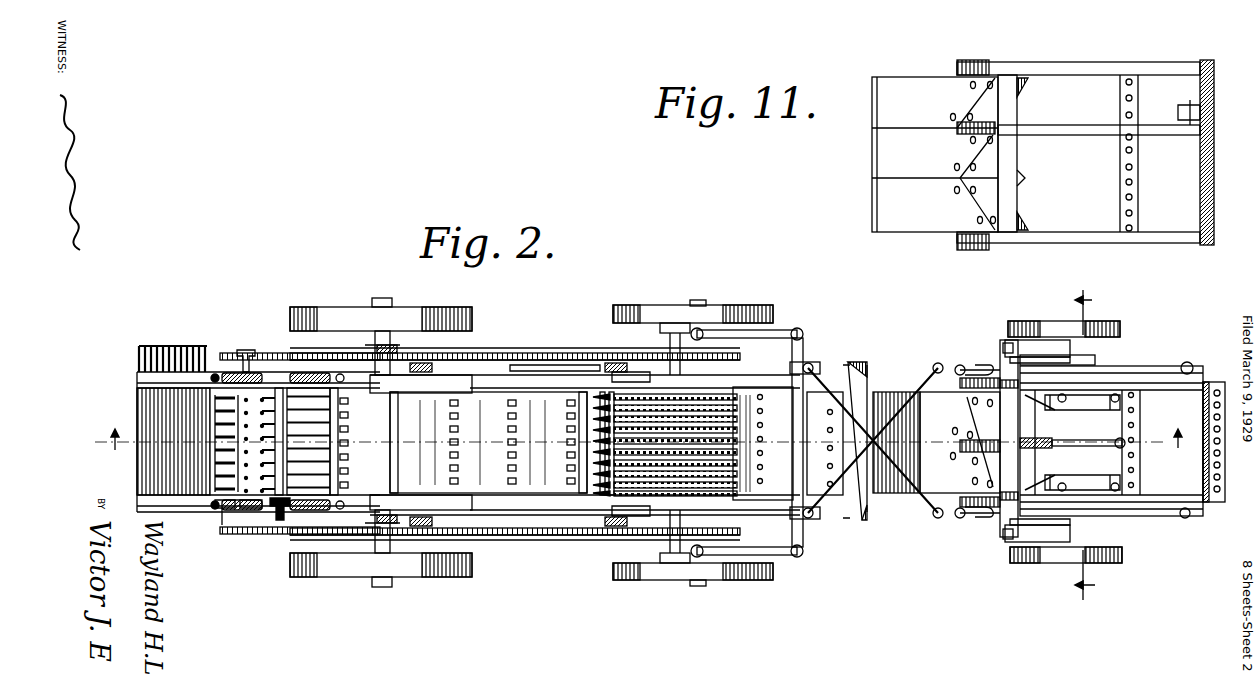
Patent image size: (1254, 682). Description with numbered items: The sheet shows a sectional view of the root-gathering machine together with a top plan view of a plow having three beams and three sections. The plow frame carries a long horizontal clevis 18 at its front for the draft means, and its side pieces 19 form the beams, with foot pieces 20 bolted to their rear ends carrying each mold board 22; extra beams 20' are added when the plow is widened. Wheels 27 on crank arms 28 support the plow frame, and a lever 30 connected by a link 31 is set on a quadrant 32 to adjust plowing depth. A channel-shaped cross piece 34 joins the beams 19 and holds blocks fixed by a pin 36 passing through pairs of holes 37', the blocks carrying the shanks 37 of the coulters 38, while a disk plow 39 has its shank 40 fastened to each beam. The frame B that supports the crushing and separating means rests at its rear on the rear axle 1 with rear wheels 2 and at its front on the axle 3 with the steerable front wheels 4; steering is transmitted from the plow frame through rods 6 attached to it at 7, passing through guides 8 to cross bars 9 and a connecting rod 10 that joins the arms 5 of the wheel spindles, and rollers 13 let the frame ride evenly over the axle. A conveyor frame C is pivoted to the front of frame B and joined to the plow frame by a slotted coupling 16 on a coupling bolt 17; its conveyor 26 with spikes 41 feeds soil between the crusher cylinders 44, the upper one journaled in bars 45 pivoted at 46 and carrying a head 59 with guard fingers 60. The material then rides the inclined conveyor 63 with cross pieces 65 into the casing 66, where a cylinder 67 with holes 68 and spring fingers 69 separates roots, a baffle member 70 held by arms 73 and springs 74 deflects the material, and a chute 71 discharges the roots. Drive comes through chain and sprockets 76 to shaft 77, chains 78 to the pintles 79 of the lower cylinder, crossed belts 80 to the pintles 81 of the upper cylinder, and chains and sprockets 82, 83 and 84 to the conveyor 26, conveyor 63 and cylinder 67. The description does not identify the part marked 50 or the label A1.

In FIG. 2, the rear axle 1 is at (372, 547).
In FIG. 2, the rear wheels 2 is at (440, 308).
In FIG. 2, the front axle 3 is at (745, 385).
In FIG. 2, the front wheels 4 is at (740, 310).
In FIG. 2, the arms of the wheel spindles 5 is at (790, 328).
In FIG. 2, the rods 6 is at (1150, 383).
In FIG. 2, the attachment of rods to plow frame 7 is at (1193, 368).
In FIG. 2, the guides 8 is at (975, 365).
In FIG. 2, the cross bars 9 is at (920, 380).
In FIG. 2, the connecting rod 10 is at (803, 537).
In FIG. 2, the rollers 13 is at (1192, 441).
In FIG. 2, the slotted coupling 16 is at (862, 377).
In FIG. 2, the coupling bolt 17 is at (915, 458).
In FIG. 11, the clevis 18 is at (1205, 57).
In FIG. 2, the clevis 18 is at (1210, 505).
In FIG. 11, the side pieces 19 is at (1085, 62).
In FIG. 2, the side pieces 19 is at (1120, 370).
In FIG. 11, the foot pieces 20 is at (1002, 160).
In FIG. 2, the foot pieces 20 is at (962, 440).
In FIG. 11, the extra beams 20' is at (1099, 153).
In FIG. 11, the mold board 22 is at (918, 92).
In FIG. 2, the conveyor 26 is at (748, 395).
In FIG. 2, the wheels 27 is at (1105, 321).
In FIG. 2, the crank arms 28 is at (1075, 368).
In FIG. 2, the lever 30 is at (1055, 444).
In FIG. 2, the link 31 is at (1030, 345).
In FIG. 2, the quadrant 32 is at (962, 432).
In FIG. 11, the cross piece 34 is at (1135, 152).
In FIG. 2, the cross piece 34 is at (1140, 462).
In FIG. 2, the pin 36 is at (1142, 487).
In FIG. 11, the shanks of the coulters 37 is at (1102, 187).
In FIG. 2, the shanks of the coulters 37 is at (1127, 441).
In FIG. 2, the holes 37' is at (1164, 418).
In FIG. 2, the coulters 38 is at (1110, 447).
In FIG. 2, the disk plow 39 is at (1030, 395).
In FIG. 2, the shank 40 is at (1060, 396).
In FIG. 2, the spikes or projections 41 is at (790, 500).
In FIG. 2, the crusher cylinders 44 is at (595, 440).
In FIG. 2, the bars 45 is at (475, 375).
In FIG. 2, the pivot of bars 46 is at (375, 480).
In FIG. 2, the wheel 50 is at (628, 320).
In FIG. 2, the head 59 is at (752, 497).
In FIG. 2, the guard fingers 60 is at (740, 458).
In FIG. 2, the inclined conveyor 63 is at (530, 385).
In FIG. 2, the cross pieces 65 is at (510, 452).
In FIG. 2, the casing 66 is at (140, 470).
In FIG. 2, the cylinder 67 is at (255, 492).
In FIG. 2, the holes 68 is at (215, 437).
In FIG. 2, the spring fingers 69 is at (228, 492).
In FIG. 2, the swinging baffle member 70 is at (280, 508).
In FIG. 2, the inclined grate or chute 71 is at (165, 348).
In FIG. 2, the arm 73 is at (255, 372).
In FIG. 2, the springs 74 is at (225, 372).
In FIG. 2, the chain and sprockets 76 is at (450, 560).
In FIG. 2, the shaft 77 is at (448, 445).
In FIG. 2, the chains and sprockets 78 is at (490, 352).
In FIG. 2, the pintles of the lower crusher cylinder 79 is at (628, 360).
In FIG. 2, the pulleys and belts 80 is at (580, 352).
In FIG. 2, the pintles of the upper cylinder 81 is at (672, 323).
In FIG. 2, the chains and sprockets 82 is at (710, 293).
In FIG. 2, the chains and sprockets 83 is at (382, 345).
In FIG. 2, the chains and sprockets 84 is at (265, 352).
In FIG. 11, the rear unit A1 is at (1154, 60).
In FIG. 2, the rear unit A1 is at (1170, 383).
In FIG. 2, the frame B is at (558, 378).
In FIG. 2, the conveyor frame C is at (778, 390).